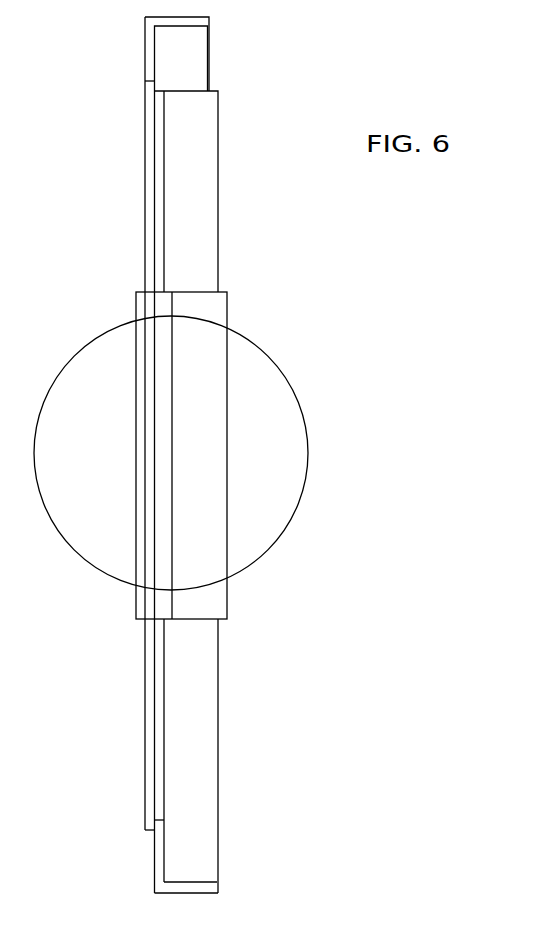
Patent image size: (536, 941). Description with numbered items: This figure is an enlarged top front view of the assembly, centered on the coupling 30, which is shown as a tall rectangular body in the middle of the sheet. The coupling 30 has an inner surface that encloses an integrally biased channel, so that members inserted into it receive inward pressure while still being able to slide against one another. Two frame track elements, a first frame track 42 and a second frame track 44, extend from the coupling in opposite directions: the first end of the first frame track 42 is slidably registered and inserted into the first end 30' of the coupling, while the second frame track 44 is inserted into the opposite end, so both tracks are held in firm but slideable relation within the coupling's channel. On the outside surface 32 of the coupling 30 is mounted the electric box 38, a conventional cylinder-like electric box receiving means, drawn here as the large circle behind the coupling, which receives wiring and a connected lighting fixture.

The coupling 30 is at (217, 455).
The first end of the coupling 30' is at (217, 592).
The outside surface of the coupling 32 is at (150, 342).
The electric box 38 is at (308, 458).
The first frame track 42 is at (190, 823).
The second frame track 44 is at (191, 64).